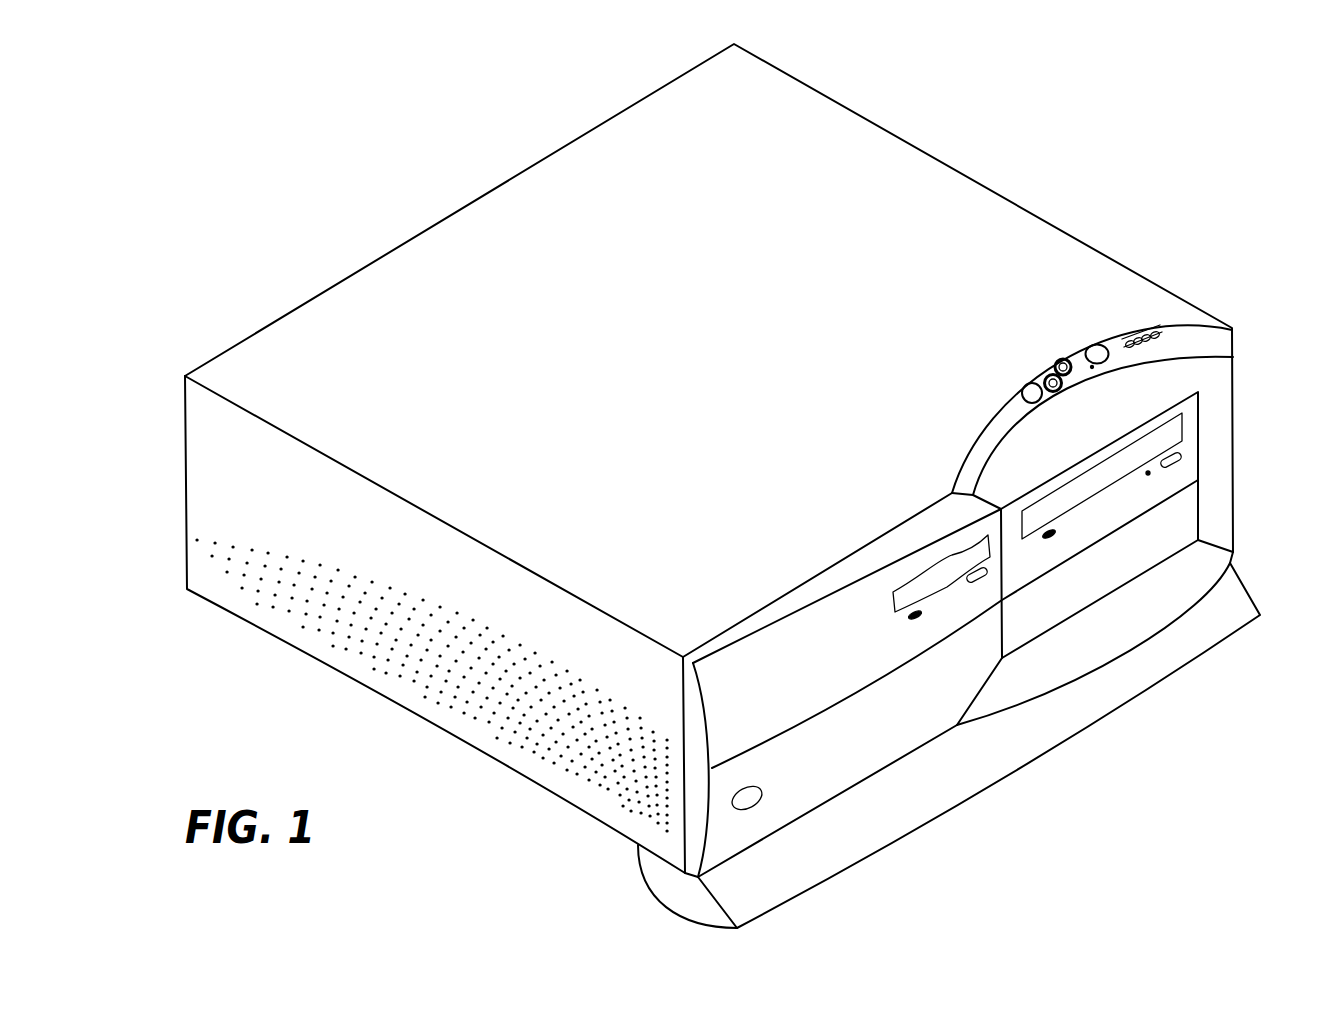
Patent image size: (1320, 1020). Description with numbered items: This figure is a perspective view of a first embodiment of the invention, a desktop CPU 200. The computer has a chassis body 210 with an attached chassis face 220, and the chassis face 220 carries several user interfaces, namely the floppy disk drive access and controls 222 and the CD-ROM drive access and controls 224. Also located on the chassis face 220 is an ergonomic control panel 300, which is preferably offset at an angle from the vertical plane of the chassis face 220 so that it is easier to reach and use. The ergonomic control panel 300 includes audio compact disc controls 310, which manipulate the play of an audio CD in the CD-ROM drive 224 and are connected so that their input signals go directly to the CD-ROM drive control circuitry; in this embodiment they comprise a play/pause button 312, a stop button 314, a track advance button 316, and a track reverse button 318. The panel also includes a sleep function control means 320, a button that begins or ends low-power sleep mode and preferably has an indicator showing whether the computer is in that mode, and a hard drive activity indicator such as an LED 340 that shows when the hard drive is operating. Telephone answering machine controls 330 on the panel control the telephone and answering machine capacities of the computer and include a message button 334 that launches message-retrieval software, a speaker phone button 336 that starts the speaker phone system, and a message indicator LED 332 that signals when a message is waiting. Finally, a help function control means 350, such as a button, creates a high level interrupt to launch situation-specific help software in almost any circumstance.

The desktop CPU 200 is at (389, 150).
The chassis body 210 is at (610, 390).
The chassis face 220 is at (781, 680).
The floppy disk drive access and controls 222 is at (893, 608).
The CD-ROM drive access and controls 224 is at (1097, 508).
The ergonomic control panel 300 is at (1198, 327).
The audio compact disc controls 310 is at (1139, 330).
The play/pause button 312 is at (1143, 345).
The stop button 314 is at (1135, 348).
The track advance button 316 is at (1151, 341).
The track reverse button 318 is at (1160, 335).
The sleep function control means 320 is at (1100, 344).
The telephone answering machine controls 330 is at (1045, 379).
The message indicator LED 332 is at (1080, 356).
The message button 334 is at (1057, 360).
The speaker phone button 336 is at (1057, 392).
The hard drive activity indicator LED 340 is at (1093, 368).
The help function control means 350 is at (1021, 390).